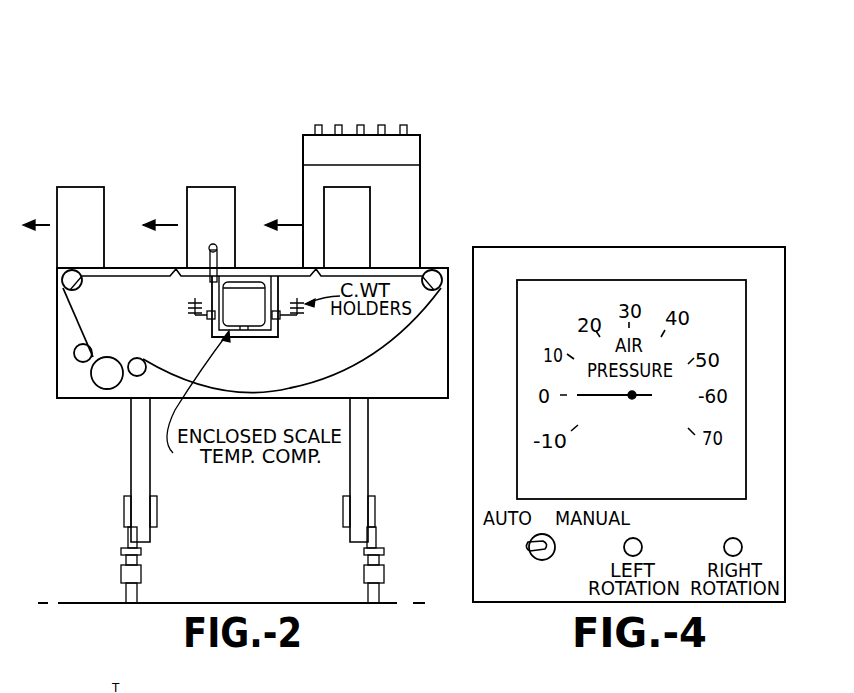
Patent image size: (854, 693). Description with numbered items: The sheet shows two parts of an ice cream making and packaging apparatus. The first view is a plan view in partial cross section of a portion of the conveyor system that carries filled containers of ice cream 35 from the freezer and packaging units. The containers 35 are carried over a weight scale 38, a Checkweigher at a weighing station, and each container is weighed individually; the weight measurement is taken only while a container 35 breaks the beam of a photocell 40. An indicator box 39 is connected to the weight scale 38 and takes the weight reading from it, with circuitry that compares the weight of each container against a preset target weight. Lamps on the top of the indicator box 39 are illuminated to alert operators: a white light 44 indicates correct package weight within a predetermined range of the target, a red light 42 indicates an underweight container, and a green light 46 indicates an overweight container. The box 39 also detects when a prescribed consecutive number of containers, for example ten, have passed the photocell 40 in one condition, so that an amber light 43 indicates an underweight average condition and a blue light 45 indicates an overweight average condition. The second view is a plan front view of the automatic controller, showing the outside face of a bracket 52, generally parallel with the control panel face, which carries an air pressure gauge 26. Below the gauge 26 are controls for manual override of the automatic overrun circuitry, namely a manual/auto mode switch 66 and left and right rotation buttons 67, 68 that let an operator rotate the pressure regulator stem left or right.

In FIG. 2, the containers of ice cream 35 is at (92, 233).
In FIG. 2, the indicator box 39 is at (416, 195).
In FIG. 2, the photocell 40 is at (216, 245).
In FIG. 2, the red light 42 is at (314, 126).
In FIG. 2, the amber light 43 is at (337, 126).
In FIG. 2, the white light 44 is at (360, 126).
In FIG. 2, the blue light 45 is at (381, 126).
In FIG. 2, the green light 46 is at (403, 126).
In FIG. 2, the weight scale 38 is at (247, 309).
In FIG. 4, the air pressure gauge 26 is at (721, 288).
In FIG. 4, the bracket 52 is at (555, 258).
In FIG. 4, the manual/auto mode switch 66 is at (538, 558).
In FIG. 4, the left rotation button 67 is at (635, 544).
In FIG. 4, the right rotation button 68 is at (735, 544).